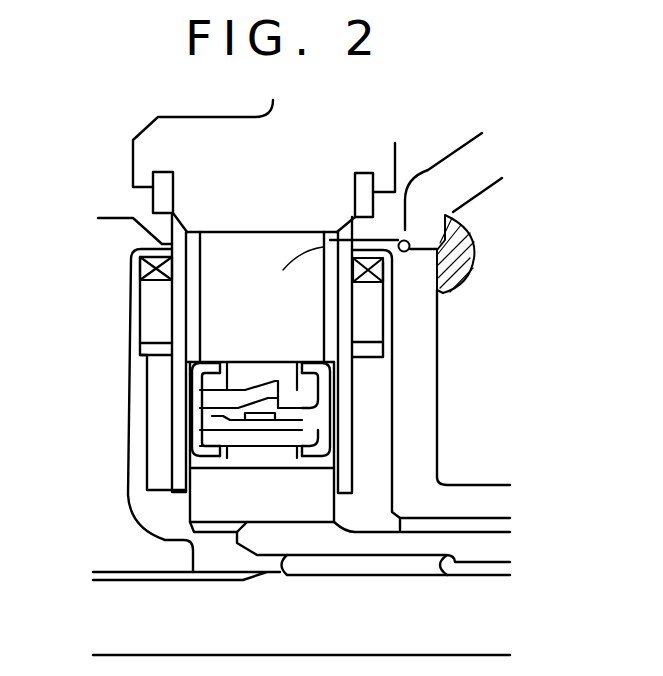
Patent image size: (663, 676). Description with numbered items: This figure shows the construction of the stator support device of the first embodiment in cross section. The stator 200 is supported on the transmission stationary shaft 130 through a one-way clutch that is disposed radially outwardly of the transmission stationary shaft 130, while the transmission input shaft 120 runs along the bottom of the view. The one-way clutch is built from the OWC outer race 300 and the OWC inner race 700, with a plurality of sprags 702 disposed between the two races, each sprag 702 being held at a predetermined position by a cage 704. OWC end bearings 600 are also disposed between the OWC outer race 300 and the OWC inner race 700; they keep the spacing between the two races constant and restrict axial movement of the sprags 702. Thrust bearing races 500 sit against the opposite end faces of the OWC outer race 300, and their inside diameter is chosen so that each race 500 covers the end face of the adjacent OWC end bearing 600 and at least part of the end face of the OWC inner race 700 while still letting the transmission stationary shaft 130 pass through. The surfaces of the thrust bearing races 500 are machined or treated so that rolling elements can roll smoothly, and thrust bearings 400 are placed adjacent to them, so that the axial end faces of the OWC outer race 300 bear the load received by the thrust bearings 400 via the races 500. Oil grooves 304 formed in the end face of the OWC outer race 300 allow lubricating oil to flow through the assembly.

The stator 200 is at (233, 175).
The one-way clutch outer race 300 is at (472, 241).
The oil grooves 304 is at (192, 292).
The thrust bearings 400 is at (153, 308).
The thrust bearing races 500 is at (177, 338).
The OWC end bearings 600 is at (190, 383).
The one-way clutch inner race 700 is at (320, 490).
The sprags 702 is at (320, 440).
The cage 704 is at (272, 458).
The transmission stationary shaft 130 is at (495, 545).
The transmission input shaft 120 is at (460, 623).